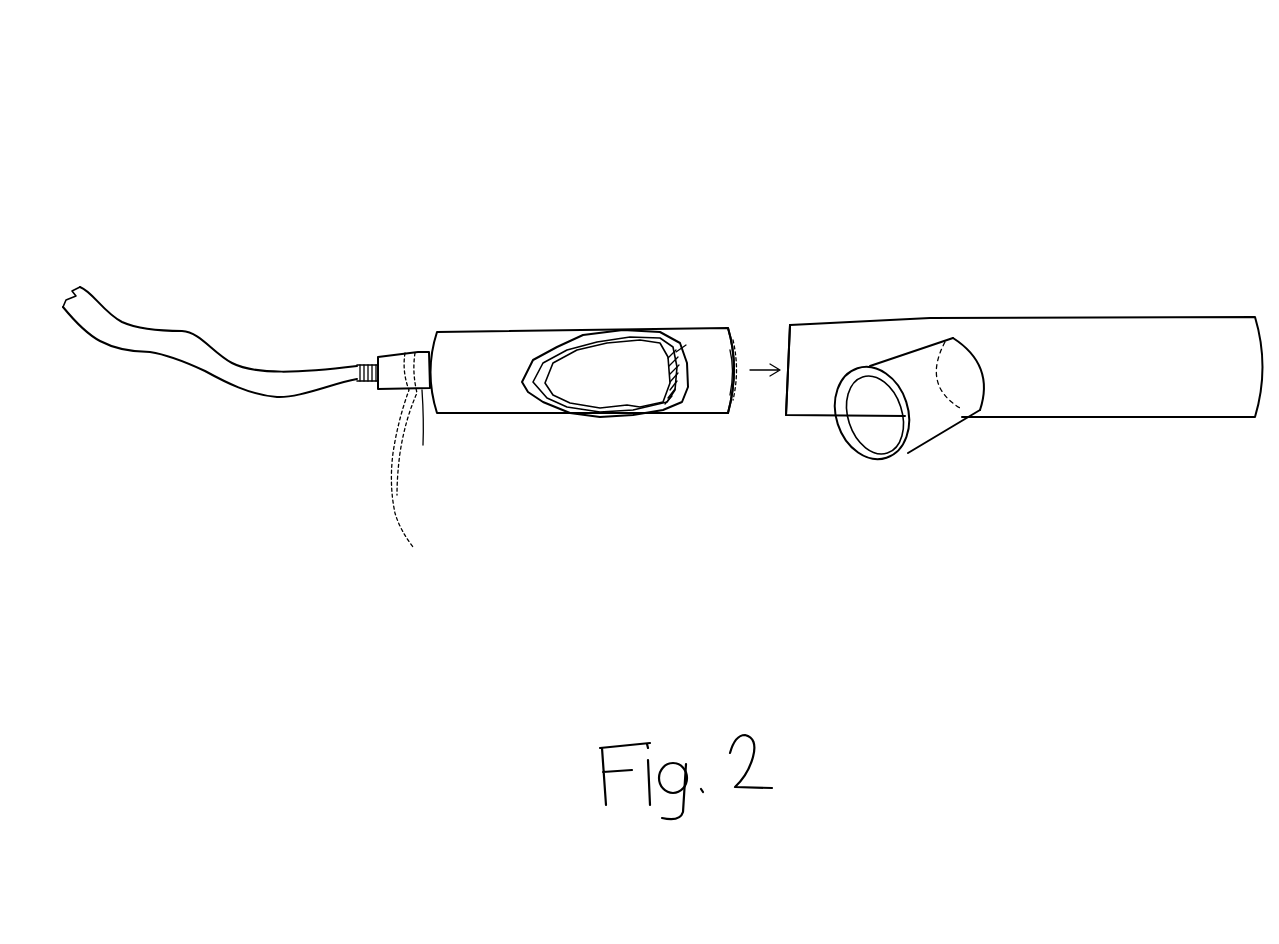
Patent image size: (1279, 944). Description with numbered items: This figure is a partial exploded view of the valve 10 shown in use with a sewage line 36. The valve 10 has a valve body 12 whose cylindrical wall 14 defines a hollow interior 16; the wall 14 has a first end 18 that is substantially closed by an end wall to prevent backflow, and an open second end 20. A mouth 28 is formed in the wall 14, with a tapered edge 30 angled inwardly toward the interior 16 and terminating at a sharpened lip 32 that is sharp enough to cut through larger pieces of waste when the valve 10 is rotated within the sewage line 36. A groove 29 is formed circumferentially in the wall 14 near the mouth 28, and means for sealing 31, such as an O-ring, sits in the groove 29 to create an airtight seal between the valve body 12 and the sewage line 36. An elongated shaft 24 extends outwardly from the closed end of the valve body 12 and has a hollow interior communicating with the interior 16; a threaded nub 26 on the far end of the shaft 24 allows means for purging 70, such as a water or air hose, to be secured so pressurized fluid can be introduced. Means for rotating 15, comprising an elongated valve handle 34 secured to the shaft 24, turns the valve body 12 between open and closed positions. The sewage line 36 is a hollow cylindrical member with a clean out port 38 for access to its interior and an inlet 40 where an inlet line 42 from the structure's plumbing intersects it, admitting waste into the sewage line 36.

The valve 10 is at (287, 347).
The valve body 12 is at (487, 347).
The cylindrical wall 14 is at (690, 415).
The means for rotating 15 is at (419, 462).
The hollow interior 16 is at (740, 373).
The first end 18 is at (427, 393).
The open second end 20 is at (733, 378).
The elongated shaft 24 is at (399, 372).
The threaded nub 26 is at (372, 389).
The mouth 28 is at (621, 340).
The groove 29 is at (547, 353).
The tapered edge 30 is at (587, 348).
The means for sealing 31 is at (690, 365).
The sharpened lip 32 is at (667, 357).
The valve handle 34 is at (388, 487).
The sewage line 36 is at (1218, 225).
The clean out port 38 is at (788, 340).
The inlet 40 is at (960, 373).
The inlet line 42 is at (930, 422).
The means for purging 70 is at (114, 317).